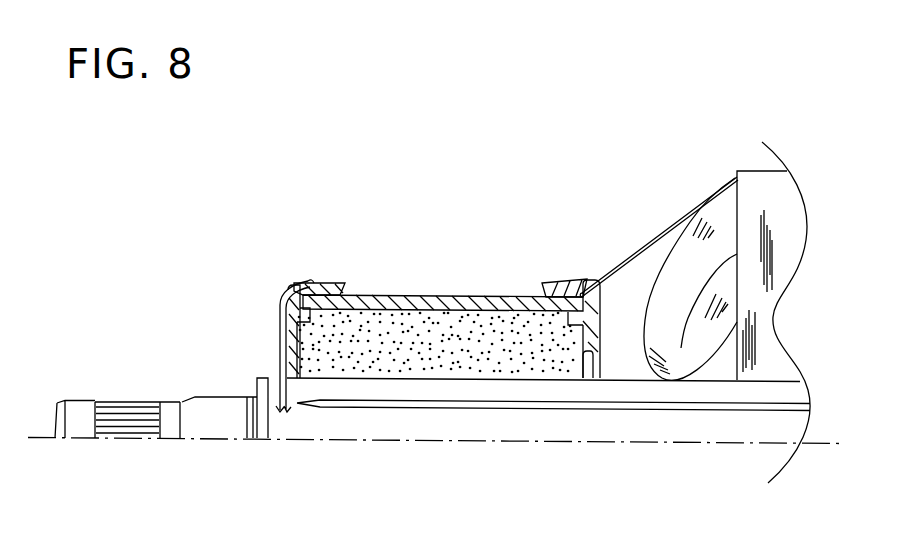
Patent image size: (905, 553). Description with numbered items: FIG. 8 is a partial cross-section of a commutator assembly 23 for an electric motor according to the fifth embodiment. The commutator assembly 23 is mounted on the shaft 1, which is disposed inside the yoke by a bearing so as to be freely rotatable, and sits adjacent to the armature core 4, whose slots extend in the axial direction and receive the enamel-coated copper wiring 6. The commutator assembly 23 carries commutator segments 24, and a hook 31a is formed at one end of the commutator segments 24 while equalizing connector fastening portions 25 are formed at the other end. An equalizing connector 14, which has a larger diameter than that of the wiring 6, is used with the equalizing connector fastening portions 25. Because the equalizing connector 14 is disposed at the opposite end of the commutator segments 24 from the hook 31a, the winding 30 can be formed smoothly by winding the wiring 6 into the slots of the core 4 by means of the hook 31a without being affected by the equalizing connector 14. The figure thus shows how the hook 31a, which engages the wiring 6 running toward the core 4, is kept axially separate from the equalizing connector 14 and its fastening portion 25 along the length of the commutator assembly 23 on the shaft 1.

The shaft 1 is at (328, 430).
The core 4 is at (760, 177).
The wiring 6 is at (657, 233).
The equalizing connector 14 is at (277, 312).
The commutator assembly 23 is at (418, 372).
The commutator segment 24 is at (355, 298).
The equalizing connector fastening portion 25 is at (307, 280).
The winding 30 is at (695, 357).
The hook 31a is at (577, 293).